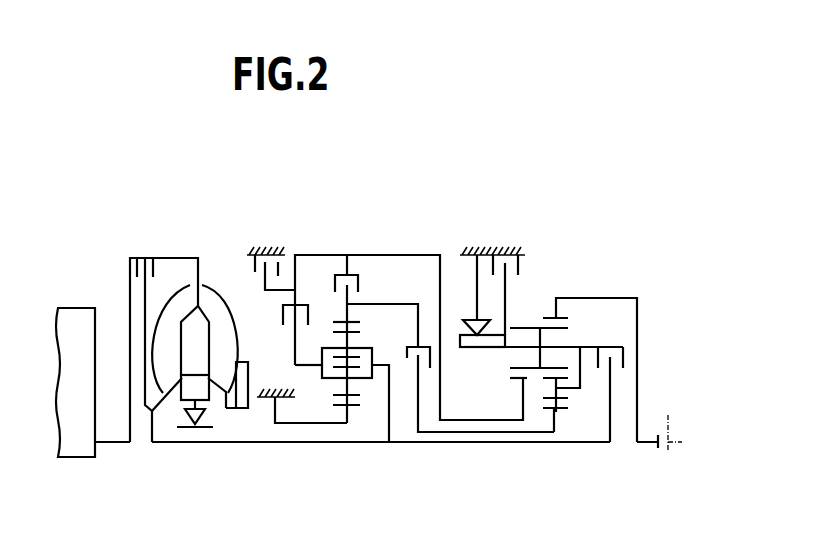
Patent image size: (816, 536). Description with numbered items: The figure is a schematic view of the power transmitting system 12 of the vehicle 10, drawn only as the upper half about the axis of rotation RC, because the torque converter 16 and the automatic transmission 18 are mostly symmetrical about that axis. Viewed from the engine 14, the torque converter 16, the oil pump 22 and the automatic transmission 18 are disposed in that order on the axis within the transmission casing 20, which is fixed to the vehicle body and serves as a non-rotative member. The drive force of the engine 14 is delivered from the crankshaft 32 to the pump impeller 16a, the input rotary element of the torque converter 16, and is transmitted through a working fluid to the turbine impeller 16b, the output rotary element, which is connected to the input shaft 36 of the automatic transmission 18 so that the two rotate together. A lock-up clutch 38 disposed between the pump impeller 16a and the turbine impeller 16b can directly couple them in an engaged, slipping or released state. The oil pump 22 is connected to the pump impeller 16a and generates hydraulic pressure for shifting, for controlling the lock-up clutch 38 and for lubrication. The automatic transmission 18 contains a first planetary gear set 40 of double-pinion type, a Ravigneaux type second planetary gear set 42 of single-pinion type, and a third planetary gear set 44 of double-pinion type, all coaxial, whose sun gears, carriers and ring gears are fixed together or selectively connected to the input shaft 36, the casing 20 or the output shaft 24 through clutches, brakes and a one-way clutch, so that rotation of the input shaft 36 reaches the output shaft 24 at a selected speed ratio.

The vehicle 10 is at (198, 160).
The vehicular power transmitting system 12 is at (297, 195).
The engine 14 is at (105, 293).
The torque converter 16 is at (184, 238).
The pump impeller 16a is at (221, 318).
The turbine impeller 16b is at (173, 320).
The automatic transmission 18 is at (390, 223).
The transmission casing 20 is at (255, 247).
The oil pump 22 is at (240, 368).
The output shaft 24 is at (642, 446).
The crankshaft 32 is at (108, 446).
The input shaft 36 is at (197, 445).
The lock-up clutch 38 is at (154, 264).
The first planetary gear set 40 is at (330, 302).
The second planetary gear set 42 is at (530, 308).
The third planetary gear set 44 is at (548, 307).